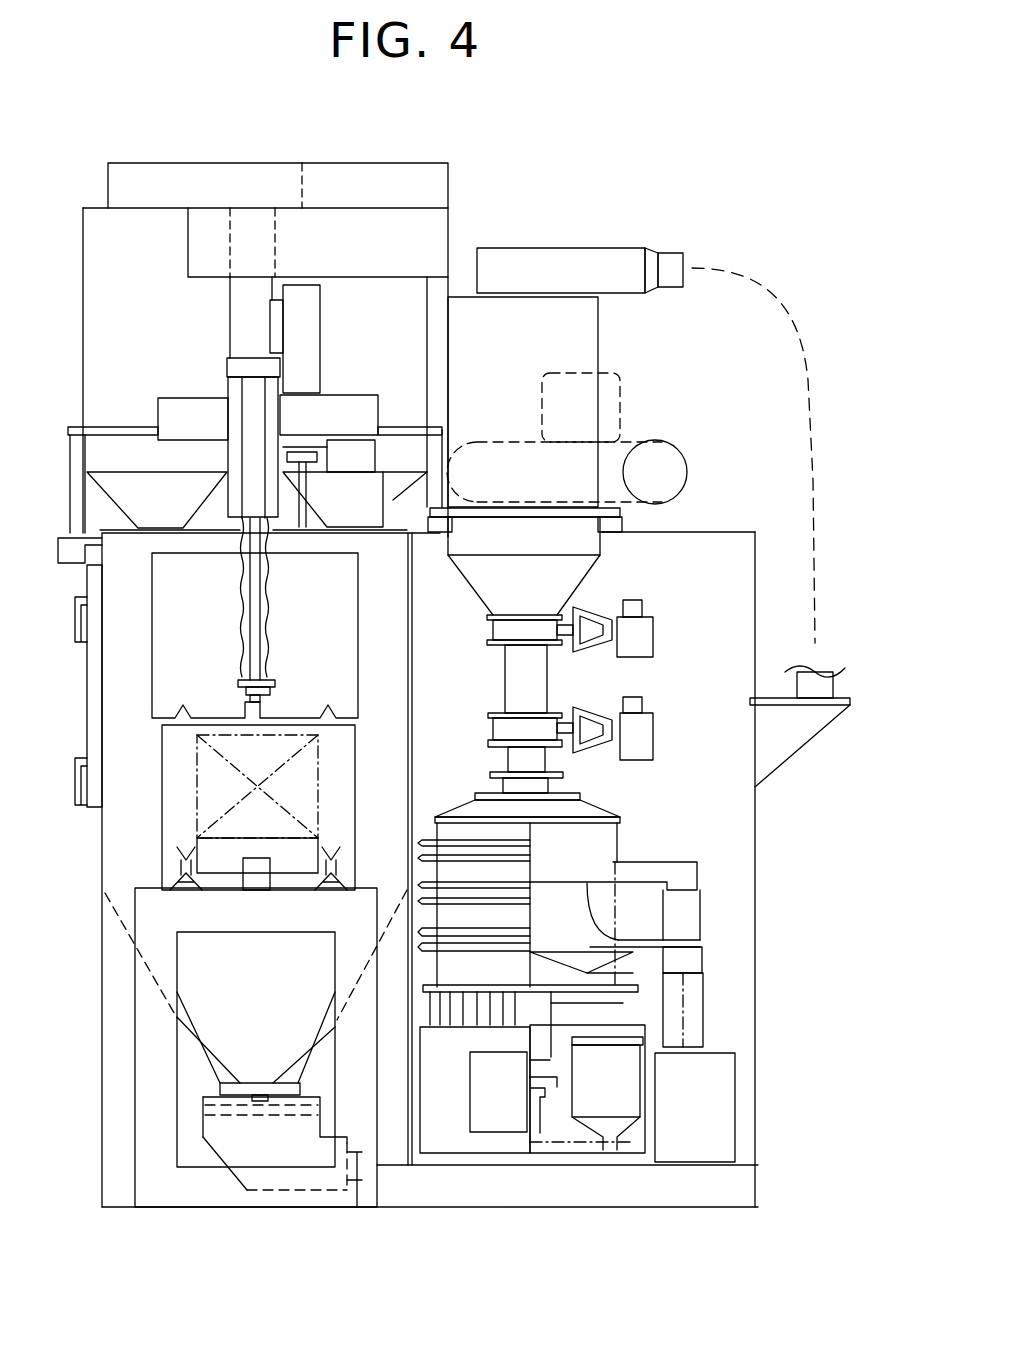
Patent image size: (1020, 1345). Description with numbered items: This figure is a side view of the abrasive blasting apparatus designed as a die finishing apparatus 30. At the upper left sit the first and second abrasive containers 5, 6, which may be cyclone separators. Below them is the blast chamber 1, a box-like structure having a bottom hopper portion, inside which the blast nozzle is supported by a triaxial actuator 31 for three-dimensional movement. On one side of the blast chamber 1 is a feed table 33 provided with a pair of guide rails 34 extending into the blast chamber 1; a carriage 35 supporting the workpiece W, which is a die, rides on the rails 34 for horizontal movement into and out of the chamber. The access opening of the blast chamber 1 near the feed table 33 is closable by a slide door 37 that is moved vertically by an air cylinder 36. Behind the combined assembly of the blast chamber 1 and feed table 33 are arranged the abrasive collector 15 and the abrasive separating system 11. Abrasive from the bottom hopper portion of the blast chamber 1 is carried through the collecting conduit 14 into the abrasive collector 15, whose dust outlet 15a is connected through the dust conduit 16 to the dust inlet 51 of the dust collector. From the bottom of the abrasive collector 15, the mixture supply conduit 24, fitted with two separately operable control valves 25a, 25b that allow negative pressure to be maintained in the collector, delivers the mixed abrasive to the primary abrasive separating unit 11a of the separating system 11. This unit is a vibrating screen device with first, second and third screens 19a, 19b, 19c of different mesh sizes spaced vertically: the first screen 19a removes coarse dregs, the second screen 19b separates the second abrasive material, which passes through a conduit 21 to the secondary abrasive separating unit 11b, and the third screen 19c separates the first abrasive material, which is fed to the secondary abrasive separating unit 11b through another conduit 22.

The blast chamber 1 is at (117, 588).
The first abrasive container 5 is at (83, 283).
The second abrasive container 6 is at (403, 298).
The abrasive separating system 11 is at (627, 954).
The primary abrasive separating unit 11a is at (447, 803).
The secondary abrasive separating unit 11b is at (733, 1067).
The collecting conduit 14 is at (360, 1207).
The abrasive collector 15 is at (598, 343).
The dust outlet 15a is at (602, 262).
The dust conduit 16 is at (792, 357).
The first screen 19a is at (587, 833).
The second screen 19b is at (663, 908).
The third screen 19c is at (633, 937).
The conduit 21 is at (677, 860).
The conduit 22 is at (690, 938).
The mixture supply conduit 24 is at (510, 683).
The control valve 25a is at (633, 628).
The control valve 25b is at (638, 727).
The die finishing apparatus 30 is at (551, 216).
The triaxial actuator 31 is at (335, 376).
The feed table 33 is at (140, 890).
The guide rails 34 is at (177, 873).
The carriage 35 is at (307, 850).
The air cylinder 36 is at (238, 397).
The slide door 37 is at (147, 648).
The dust inlet 51 is at (850, 692).
The workpiece W is at (197, 763).